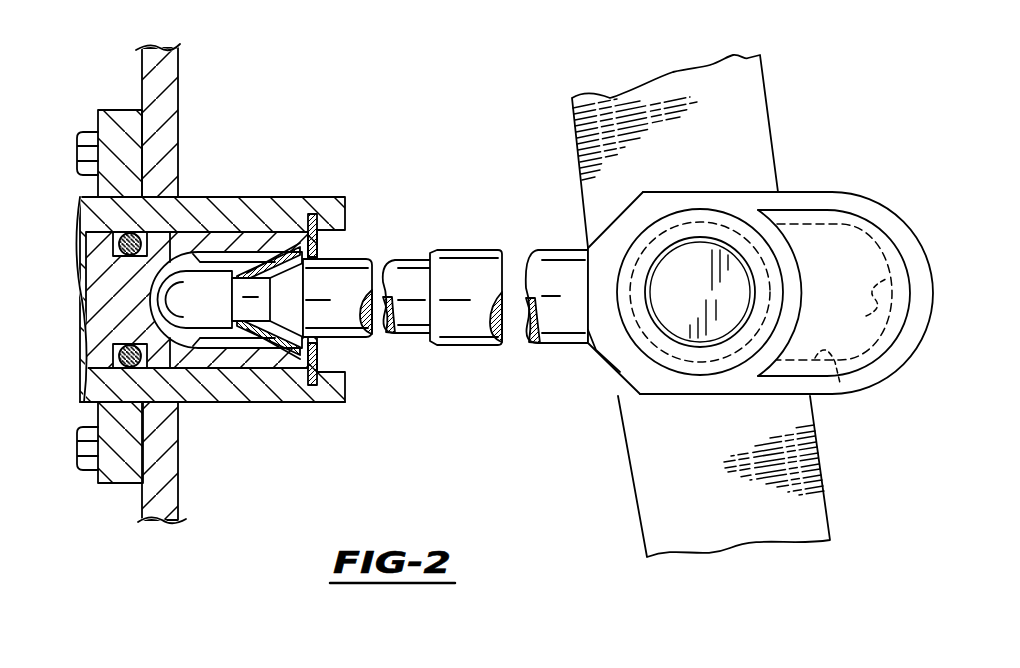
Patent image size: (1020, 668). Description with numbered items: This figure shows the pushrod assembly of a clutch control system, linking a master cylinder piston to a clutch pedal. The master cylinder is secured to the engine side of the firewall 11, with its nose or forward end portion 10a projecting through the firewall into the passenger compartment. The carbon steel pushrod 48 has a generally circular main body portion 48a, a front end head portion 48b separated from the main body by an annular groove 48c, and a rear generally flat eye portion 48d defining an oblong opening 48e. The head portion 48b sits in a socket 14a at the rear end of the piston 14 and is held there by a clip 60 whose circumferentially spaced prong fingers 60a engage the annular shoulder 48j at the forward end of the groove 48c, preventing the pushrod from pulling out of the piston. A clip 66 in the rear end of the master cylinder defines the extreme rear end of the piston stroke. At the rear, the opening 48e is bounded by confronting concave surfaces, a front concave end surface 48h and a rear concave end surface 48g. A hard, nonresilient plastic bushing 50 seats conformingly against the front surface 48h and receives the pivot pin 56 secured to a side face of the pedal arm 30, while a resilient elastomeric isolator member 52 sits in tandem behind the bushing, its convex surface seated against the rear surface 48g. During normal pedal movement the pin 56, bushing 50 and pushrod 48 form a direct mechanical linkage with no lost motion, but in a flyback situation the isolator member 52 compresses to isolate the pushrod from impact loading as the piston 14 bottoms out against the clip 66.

The firewall 11 is at (178, 80).
The socket 14a is at (158, 272).
The master cylinder piston 14 is at (184, 248).
The prong fingers 60a is at (250, 272).
The annular groove 48c is at (295, 250).
The clip 66 is at (320, 214).
The main body portion 48a is at (470, 250).
The pushrod 48 is at (548, 247).
The eye portion 48d is at (795, 192).
The isolator member 52 is at (889, 232).
The pivot pin 56 is at (700, 292).
The rear concave end surface 48g is at (866, 316).
The front concave end surface 48h is at (600, 366).
The bushing 50 is at (672, 378).
The oblong slot or opening 48e is at (840, 383).
The pedal arm 30 is at (700, 530).
The nose or forward end portion 10a is at (246, 402).
The annular shoulder 48j is at (234, 286).
The clip 60 is at (297, 340).
The front end head portion 48b is at (176, 322).